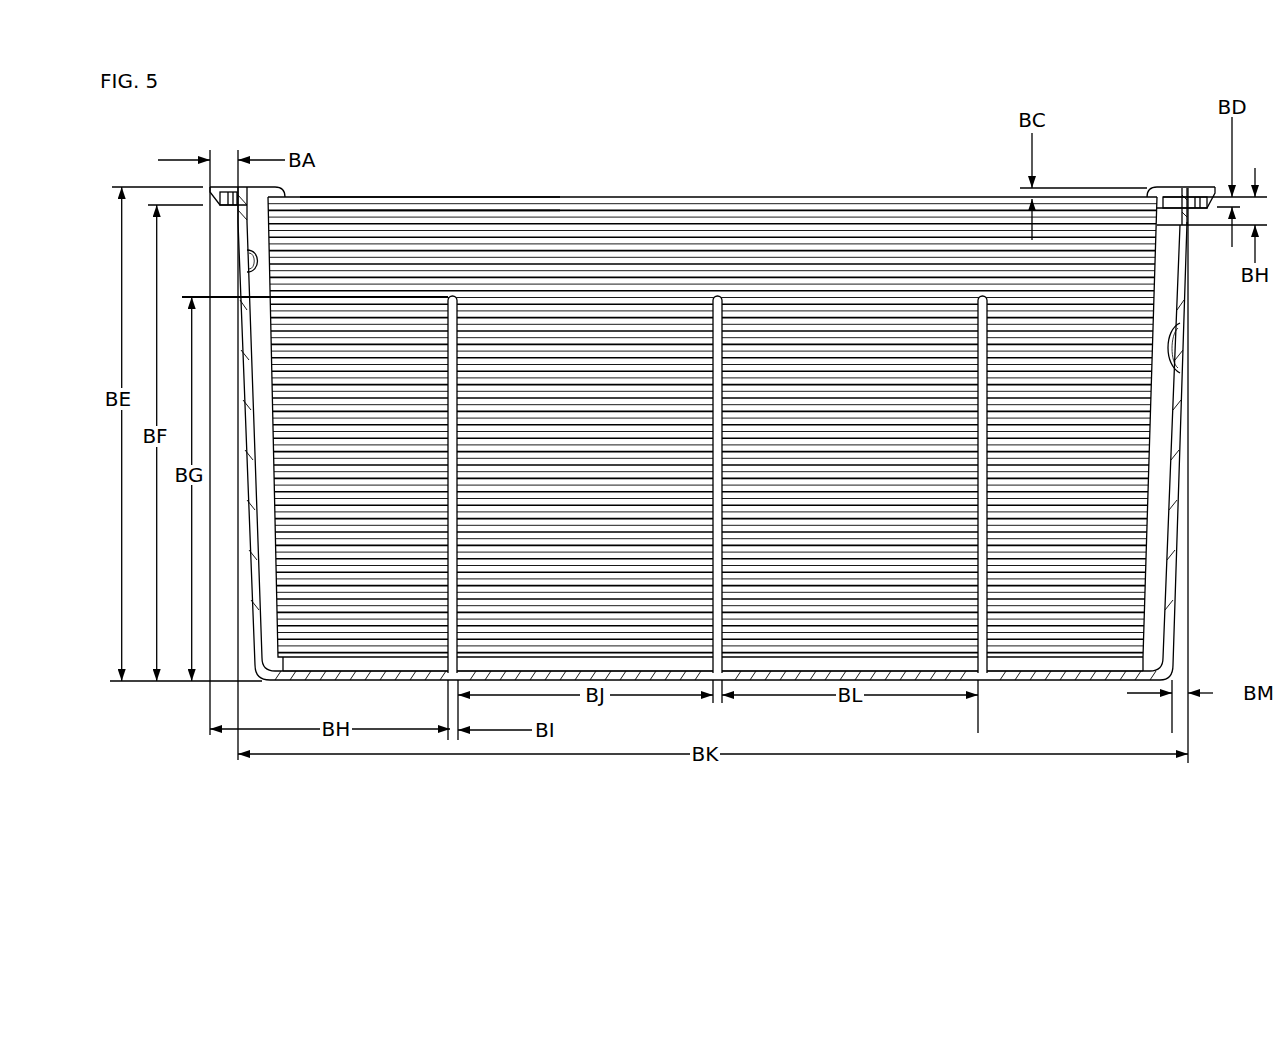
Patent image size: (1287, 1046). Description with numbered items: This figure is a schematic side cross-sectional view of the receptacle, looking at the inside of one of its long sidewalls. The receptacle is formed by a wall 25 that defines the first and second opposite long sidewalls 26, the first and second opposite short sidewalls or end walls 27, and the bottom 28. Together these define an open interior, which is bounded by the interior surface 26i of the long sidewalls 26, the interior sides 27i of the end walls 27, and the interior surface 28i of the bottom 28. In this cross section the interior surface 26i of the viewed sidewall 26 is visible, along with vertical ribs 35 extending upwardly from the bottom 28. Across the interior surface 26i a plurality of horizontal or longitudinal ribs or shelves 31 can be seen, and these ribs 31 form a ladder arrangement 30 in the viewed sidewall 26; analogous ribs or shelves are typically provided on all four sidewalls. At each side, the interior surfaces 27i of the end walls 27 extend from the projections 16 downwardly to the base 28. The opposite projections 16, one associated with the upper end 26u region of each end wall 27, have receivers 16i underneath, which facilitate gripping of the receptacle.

The wall 25 is at (685, 406).
The projections 16 is at (1195, 187).
The receivers 16i is at (232, 205).
The long sidewalls 26 is at (865, 198).
The upper edge of side wall 26u is at (813, 200).
The interior surface 26i is at (613, 270).
The end walls 27 is at (240, 277).
The interior sides 27i is at (247, 250).
The bottom 28 is at (337, 680).
The interior surface of bottom 28i is at (1062, 672).
The ladder arrangement 30 is at (547, 242).
The horizontal ribs or shelves 31 is at (383, 215).
The vertical ribs 35 is at (453, 660).